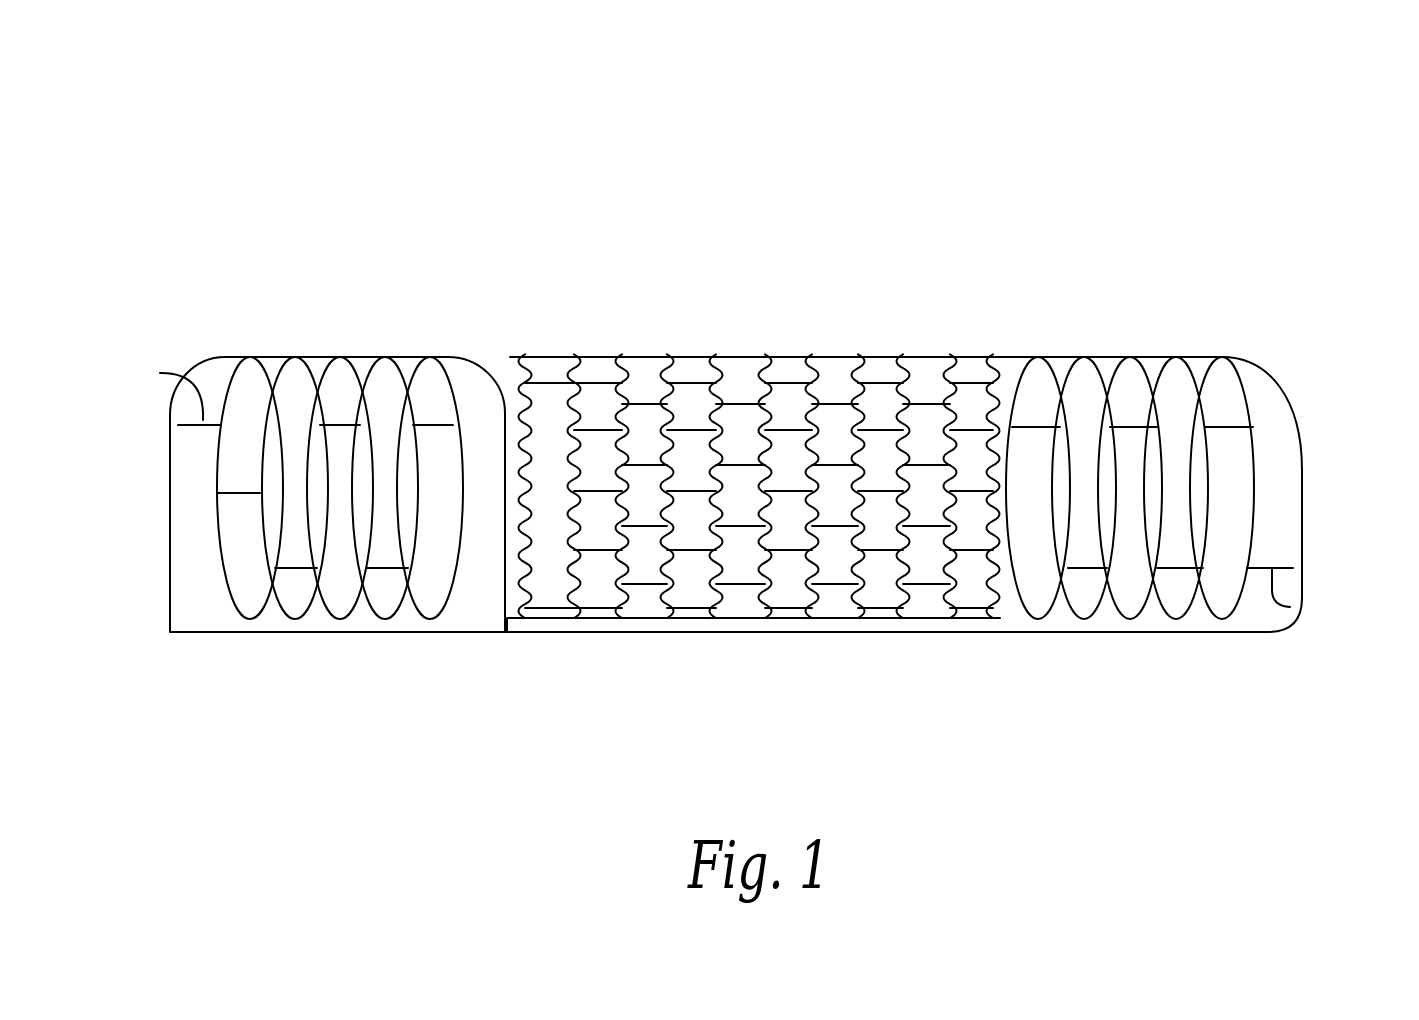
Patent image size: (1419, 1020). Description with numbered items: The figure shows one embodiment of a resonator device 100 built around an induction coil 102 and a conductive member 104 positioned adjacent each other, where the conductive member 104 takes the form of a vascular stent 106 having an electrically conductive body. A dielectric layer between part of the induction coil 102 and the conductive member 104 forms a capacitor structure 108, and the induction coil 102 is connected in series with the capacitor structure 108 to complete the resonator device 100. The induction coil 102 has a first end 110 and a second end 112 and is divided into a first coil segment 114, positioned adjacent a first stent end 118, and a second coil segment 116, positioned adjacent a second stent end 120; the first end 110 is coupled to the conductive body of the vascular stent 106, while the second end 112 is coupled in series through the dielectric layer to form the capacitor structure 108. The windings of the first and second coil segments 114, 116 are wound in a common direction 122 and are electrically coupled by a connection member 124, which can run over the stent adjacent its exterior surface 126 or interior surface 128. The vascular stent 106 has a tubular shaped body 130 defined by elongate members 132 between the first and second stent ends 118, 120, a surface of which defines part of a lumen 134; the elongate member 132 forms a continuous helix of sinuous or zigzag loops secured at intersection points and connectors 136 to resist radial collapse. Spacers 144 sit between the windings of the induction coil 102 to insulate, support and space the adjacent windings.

The resonator device 100 is at (365, 138).
The induction coil 102 is at (150, 331).
The conductive member 104 is at (658, 333).
The vascular stent 106 is at (752, 362).
The capacitor structure 108 is at (906, 355).
The first end 110 is at (535, 638).
The second end 112 is at (953, 330).
The first coil segment 114 is at (505, 343).
The second coil segment 116 is at (1302, 343).
The first stent end 118 is at (553, 334).
The second stent end 120 is at (988, 329).
The common direction 122 is at (262, 665).
The connection member 124 is at (638, 652).
The exterior surface 126 is at (696, 338).
The interior surface 128 is at (555, 391).
The tubular shaped body 130 is at (881, 599).
The elongate member 132 is at (823, 360).
The lumen 134 is at (209, 511).
The connectors 136 is at (780, 406).
The spacers 144 is at (1325, 610).